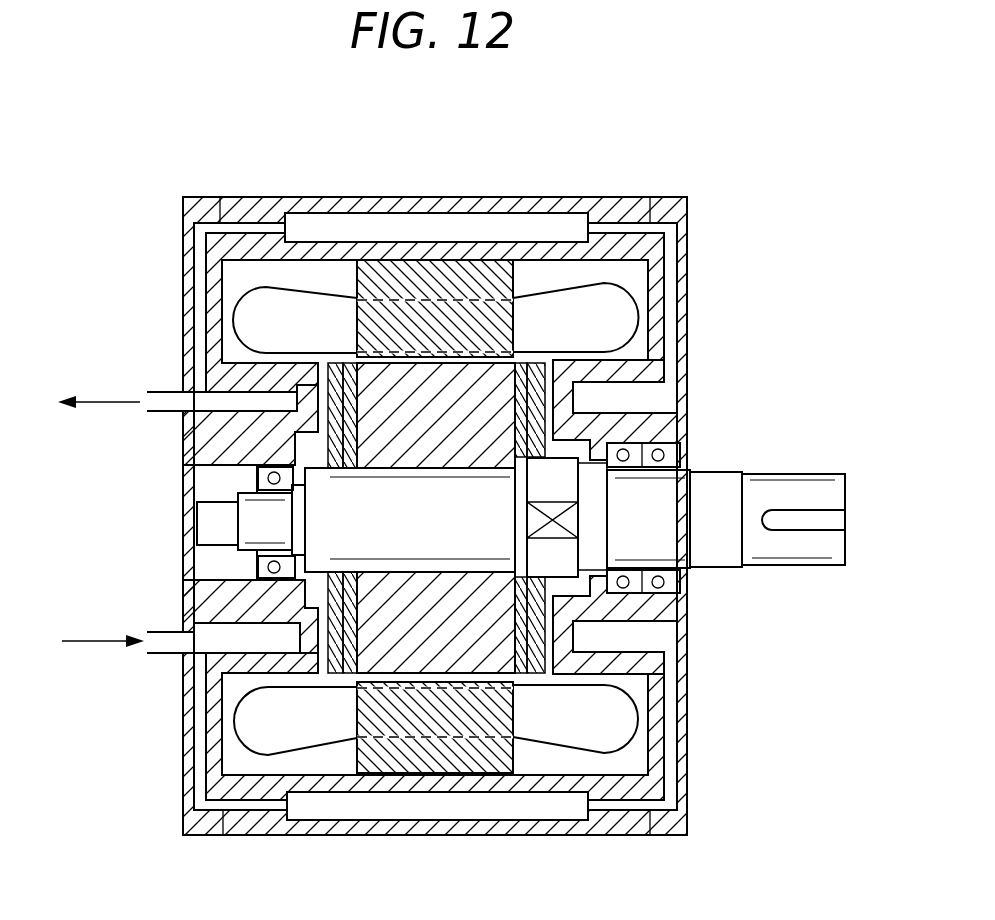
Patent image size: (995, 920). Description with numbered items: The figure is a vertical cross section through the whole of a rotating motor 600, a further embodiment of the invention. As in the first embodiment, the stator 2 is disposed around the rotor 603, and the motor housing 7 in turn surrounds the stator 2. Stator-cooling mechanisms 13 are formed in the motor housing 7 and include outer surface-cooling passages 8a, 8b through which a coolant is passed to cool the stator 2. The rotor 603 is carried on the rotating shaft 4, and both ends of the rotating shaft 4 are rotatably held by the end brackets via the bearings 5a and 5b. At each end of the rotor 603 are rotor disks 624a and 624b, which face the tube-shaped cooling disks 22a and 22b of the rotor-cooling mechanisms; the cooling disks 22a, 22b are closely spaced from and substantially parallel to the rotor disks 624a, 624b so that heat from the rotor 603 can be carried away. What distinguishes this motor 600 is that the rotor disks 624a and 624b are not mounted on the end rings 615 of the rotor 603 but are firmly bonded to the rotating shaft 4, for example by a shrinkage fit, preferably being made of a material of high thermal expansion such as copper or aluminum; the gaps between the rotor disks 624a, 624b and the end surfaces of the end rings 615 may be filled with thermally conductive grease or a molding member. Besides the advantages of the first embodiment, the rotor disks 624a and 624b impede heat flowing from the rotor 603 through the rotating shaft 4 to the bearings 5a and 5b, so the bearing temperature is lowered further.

The rotating motor 600 is at (703, 190).
The stator-cooling mechanisms 13 is at (393, 190).
The motor housing 7 is at (452, 204).
The outer surface-cooling passage 8a is at (308, 238).
The outer surface-cooling passage 8b is at (354, 812).
The stator 2 is at (474, 282).
The rotor 603 is at (447, 645).
The rotor disk 624b is at (333, 386).
The end rings 615 is at (519, 368).
The rotor disk 624a is at (547, 383).
The cooling disk 22a is at (566, 400).
The cooling disk 22b is at (310, 438).
The rotating shaft 4 is at (780, 568).
The bearing 5a is at (697, 455).
The bearing 5b is at (240, 565).